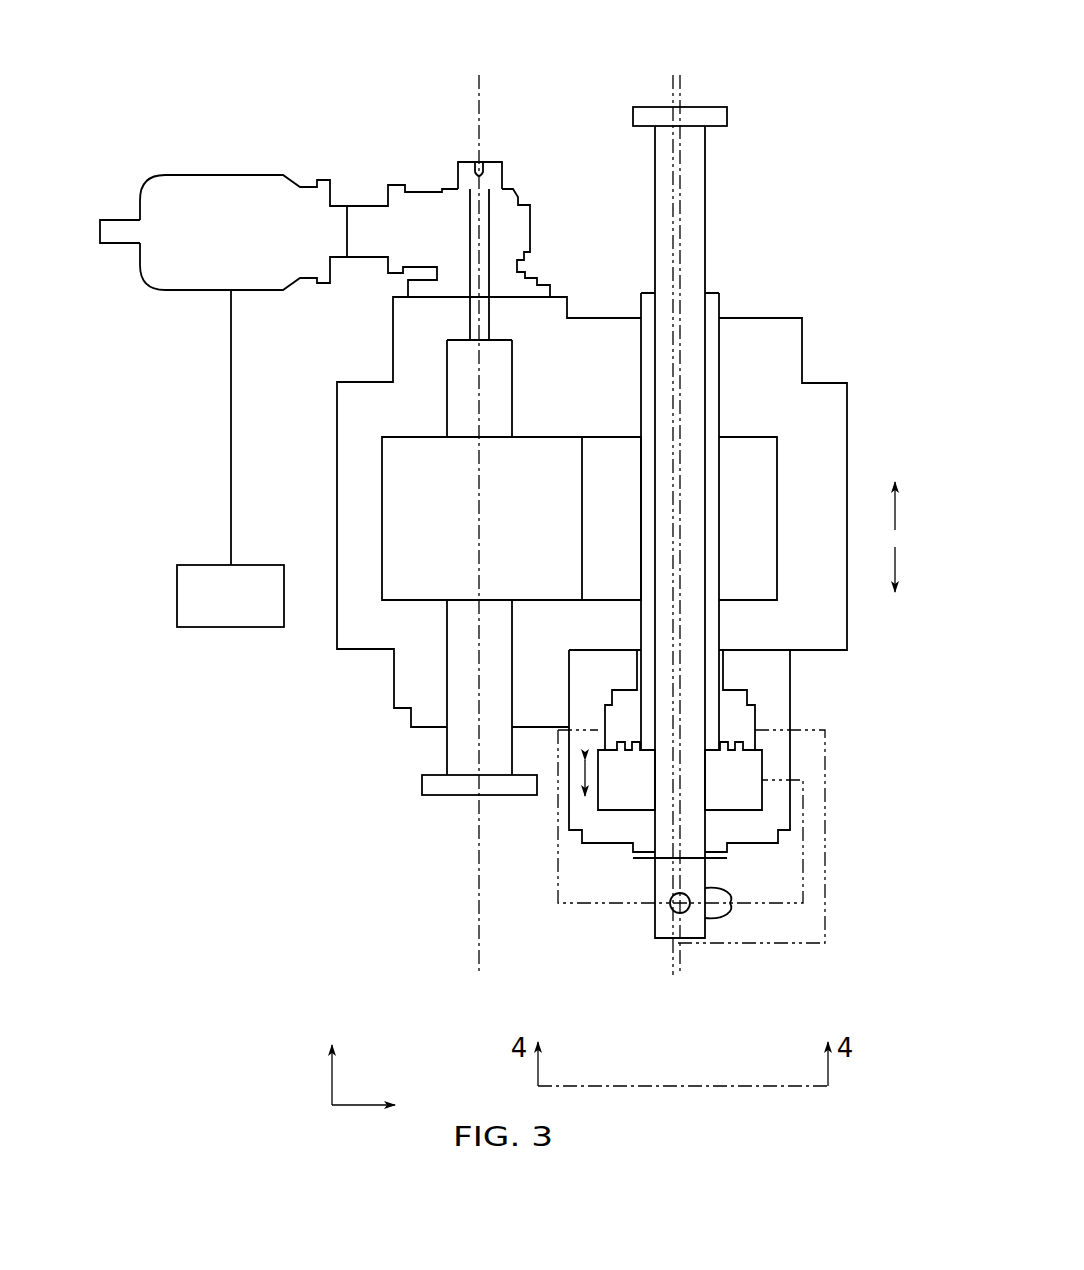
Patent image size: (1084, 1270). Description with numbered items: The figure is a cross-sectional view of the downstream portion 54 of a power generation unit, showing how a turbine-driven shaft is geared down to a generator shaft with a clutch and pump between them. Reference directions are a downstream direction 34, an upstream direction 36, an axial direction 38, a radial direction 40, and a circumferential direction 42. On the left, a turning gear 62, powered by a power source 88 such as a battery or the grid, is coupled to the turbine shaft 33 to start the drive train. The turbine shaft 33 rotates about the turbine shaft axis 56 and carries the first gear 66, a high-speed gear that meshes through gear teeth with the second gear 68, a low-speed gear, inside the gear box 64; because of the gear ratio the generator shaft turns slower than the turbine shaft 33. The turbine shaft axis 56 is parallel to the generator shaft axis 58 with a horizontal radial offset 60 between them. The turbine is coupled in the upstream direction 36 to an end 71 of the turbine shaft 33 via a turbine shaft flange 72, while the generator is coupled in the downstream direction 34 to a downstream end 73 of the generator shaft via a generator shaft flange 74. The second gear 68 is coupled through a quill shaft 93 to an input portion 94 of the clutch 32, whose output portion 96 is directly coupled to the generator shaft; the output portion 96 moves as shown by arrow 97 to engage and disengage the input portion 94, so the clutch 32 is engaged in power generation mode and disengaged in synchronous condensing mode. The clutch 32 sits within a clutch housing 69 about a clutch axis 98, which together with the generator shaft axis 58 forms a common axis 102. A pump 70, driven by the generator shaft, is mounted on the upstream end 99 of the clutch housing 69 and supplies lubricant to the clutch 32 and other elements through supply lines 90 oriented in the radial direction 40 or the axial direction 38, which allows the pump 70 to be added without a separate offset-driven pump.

The clutch 32 is at (765, 740).
The turbine shaft 33 is at (447, 685).
The downstream direction 34 is at (887, 500).
The upstream direction 36 is at (887, 563).
The axial direction 38 is at (332, 1082).
The radial direction 40 is at (362, 1100).
The circumferential direction 42 is at (353, 1090).
The downstream portion 54 is at (836, 318).
The turbine shaft axis 56 is at (480, 618).
The generator shaft axis 58 is at (680, 278).
The radial offset 60 is at (678, 958).
The turning gear 62 is at (232, 173).
The gear box 64 is at (845, 552).
The first gear 66 is at (382, 558).
The second gear 68 is at (748, 437).
The clutch housing 69 is at (790, 795).
The pump 70 is at (653, 918).
The end of the turbine shaft 71 is at (460, 808).
The turbine shaft flange 72 is at (437, 797).
The downstream end 73 is at (694, 92).
The generator shaft flange 74 is at (713, 107).
The power source 88 is at (213, 565).
The supply lines 90 is at (558, 870).
The quill shaft 93 is at (640, 675).
The input portion 94 is at (758, 712).
The output portion 96 is at (762, 772).
The arrow 97 is at (582, 778).
The clutch axis 98 is at (762, 760).
The upstream end 99 is at (752, 855).
The common axis 102 is at (680, 552).